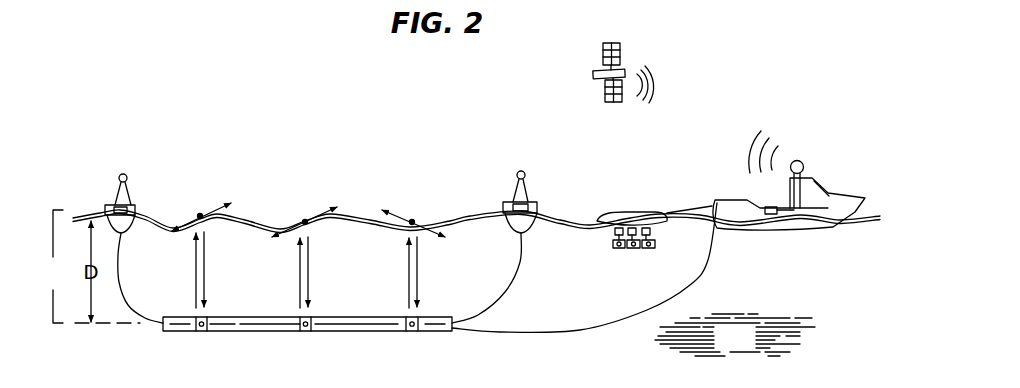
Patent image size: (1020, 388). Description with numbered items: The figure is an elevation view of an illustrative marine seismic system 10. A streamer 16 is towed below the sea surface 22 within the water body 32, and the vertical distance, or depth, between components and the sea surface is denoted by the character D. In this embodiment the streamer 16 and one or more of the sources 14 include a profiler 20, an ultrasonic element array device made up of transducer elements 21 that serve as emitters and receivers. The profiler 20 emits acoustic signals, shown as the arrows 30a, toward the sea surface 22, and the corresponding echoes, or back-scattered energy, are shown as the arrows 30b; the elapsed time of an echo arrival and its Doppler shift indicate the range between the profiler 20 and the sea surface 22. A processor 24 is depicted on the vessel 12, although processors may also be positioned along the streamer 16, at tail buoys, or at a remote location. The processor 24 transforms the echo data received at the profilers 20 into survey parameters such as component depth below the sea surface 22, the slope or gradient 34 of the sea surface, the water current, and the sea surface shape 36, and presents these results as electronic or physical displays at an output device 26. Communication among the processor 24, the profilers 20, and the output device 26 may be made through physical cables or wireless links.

The system 10 is at (256, 135).
The vessel 12 is at (795, 173).
The sources 14 is at (621, 249).
The streamer 16 is at (243, 331).
The profiler 20 is at (613, 244).
The elements 21 is at (308, 331).
The sea surface 22 is at (262, 218).
The processor 24 is at (771, 206).
The output device 26 is at (802, 162).
The emitted acoustic signals 30a is at (299, 280).
The echoes 30b is at (309, 266).
The water body 32 is at (735, 335).
The slope of the sea surface 34 is at (200, 214).
The sea surface shape 36 is at (51, 266).